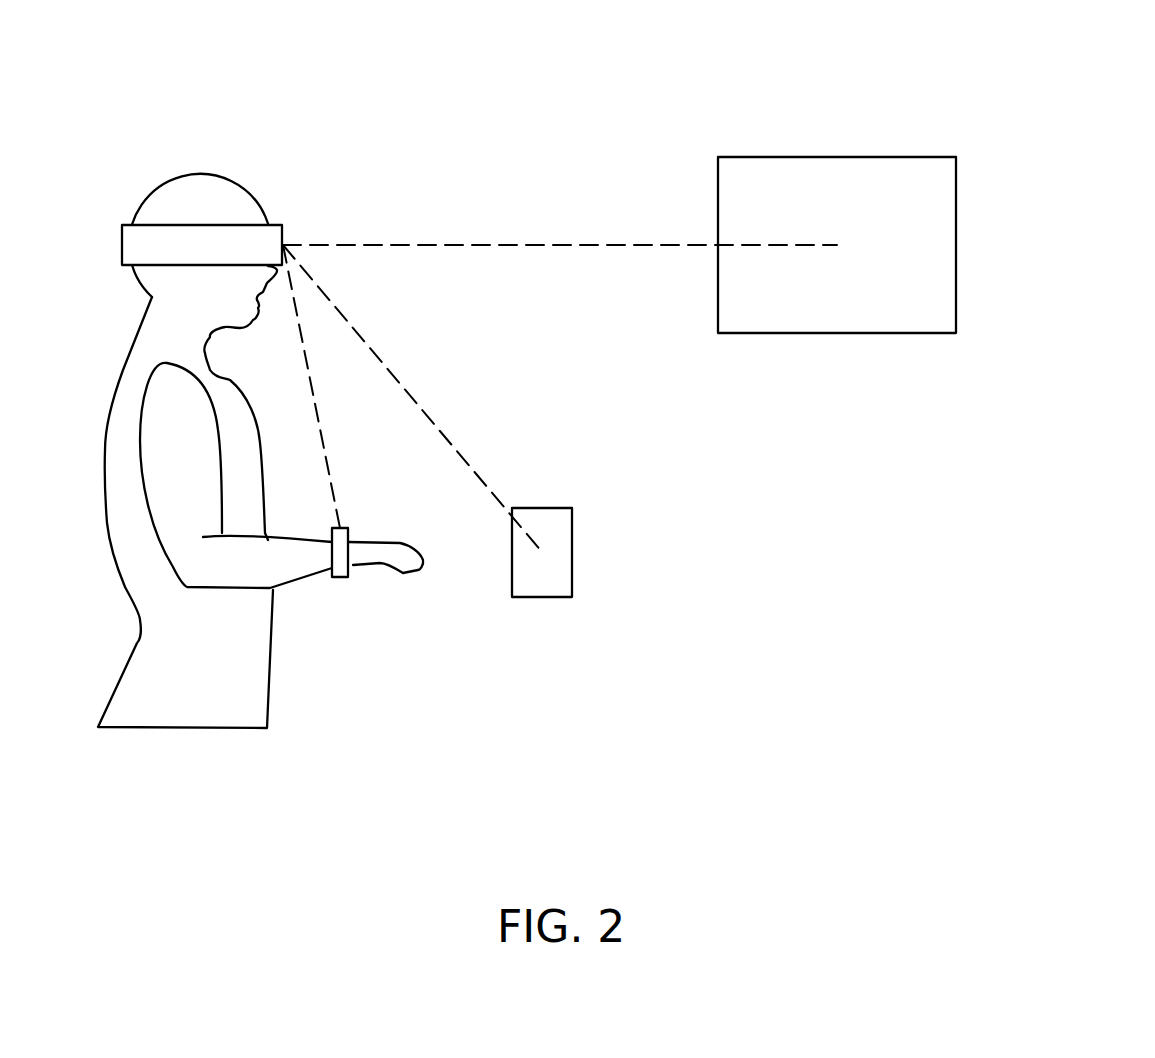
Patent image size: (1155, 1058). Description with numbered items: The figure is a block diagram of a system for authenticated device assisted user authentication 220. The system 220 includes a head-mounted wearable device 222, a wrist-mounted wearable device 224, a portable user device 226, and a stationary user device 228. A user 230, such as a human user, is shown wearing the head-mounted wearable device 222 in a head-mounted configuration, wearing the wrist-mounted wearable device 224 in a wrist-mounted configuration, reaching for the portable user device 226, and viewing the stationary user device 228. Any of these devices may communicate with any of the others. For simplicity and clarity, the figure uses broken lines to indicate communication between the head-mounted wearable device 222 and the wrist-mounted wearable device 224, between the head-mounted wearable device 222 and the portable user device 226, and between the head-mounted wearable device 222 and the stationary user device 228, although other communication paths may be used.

The system for authenticated device assisted user authentication 220 is at (1058, 116).
The head-mounted wearable device 222 is at (282, 225).
The wrist-mounted wearable device 224 is at (348, 528).
The portable user device 226 is at (542, 508).
The stationary user device 228 is at (835, 157).
The user 230 is at (197, 172).